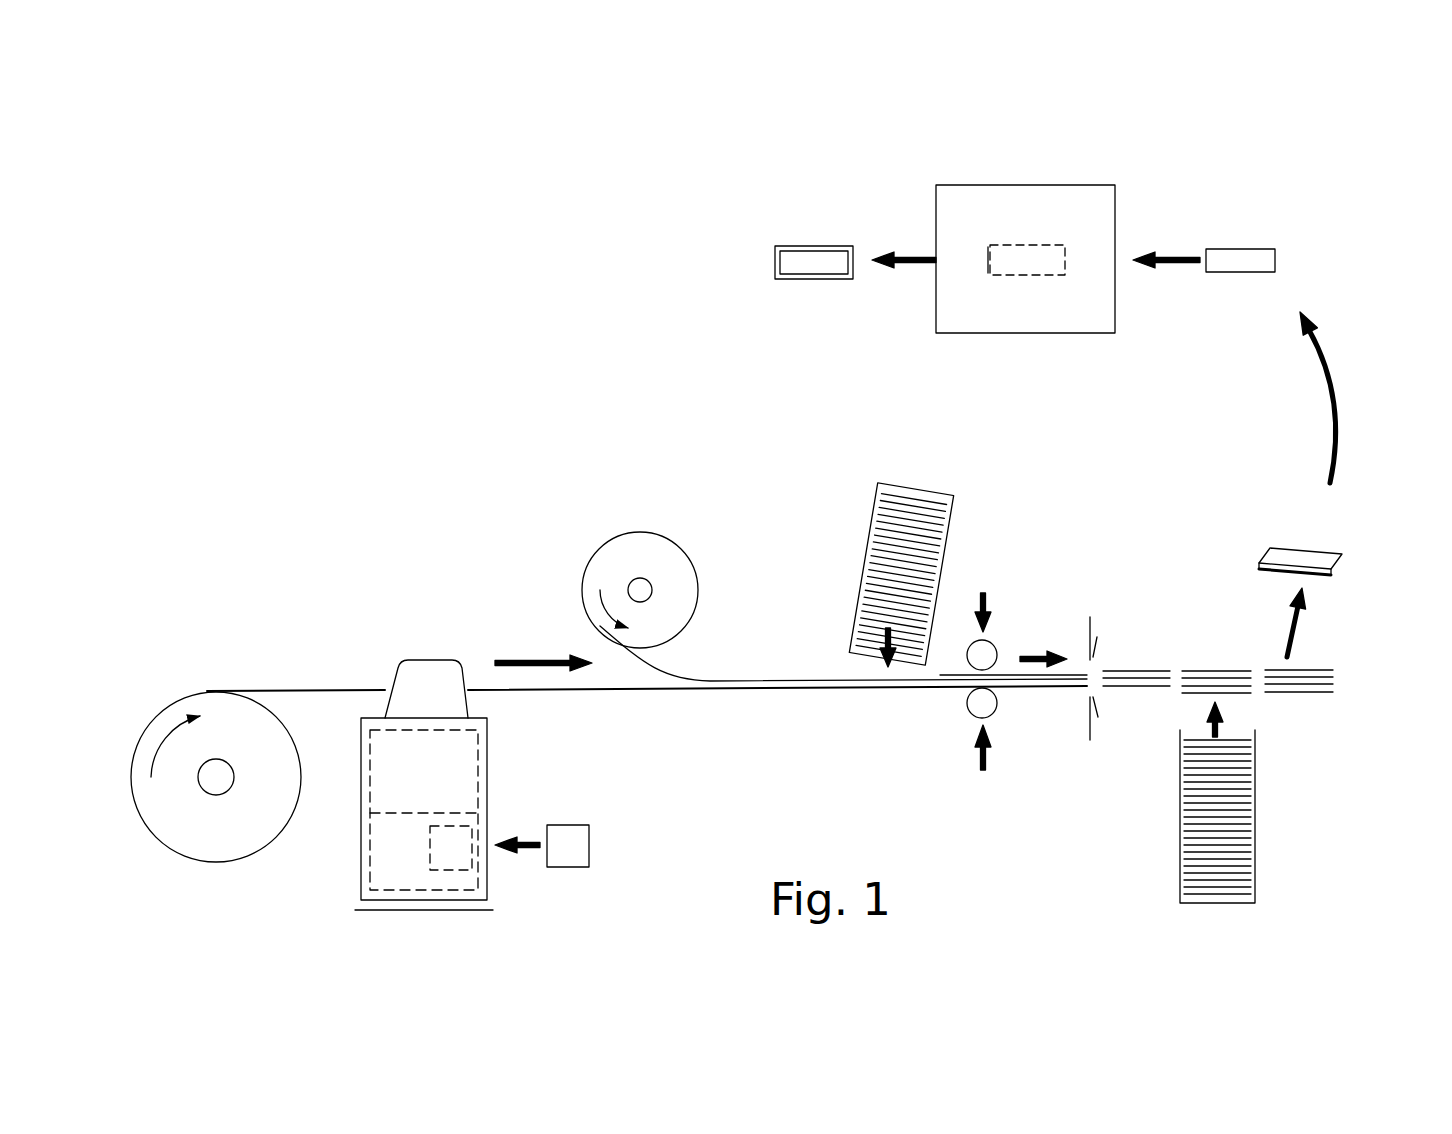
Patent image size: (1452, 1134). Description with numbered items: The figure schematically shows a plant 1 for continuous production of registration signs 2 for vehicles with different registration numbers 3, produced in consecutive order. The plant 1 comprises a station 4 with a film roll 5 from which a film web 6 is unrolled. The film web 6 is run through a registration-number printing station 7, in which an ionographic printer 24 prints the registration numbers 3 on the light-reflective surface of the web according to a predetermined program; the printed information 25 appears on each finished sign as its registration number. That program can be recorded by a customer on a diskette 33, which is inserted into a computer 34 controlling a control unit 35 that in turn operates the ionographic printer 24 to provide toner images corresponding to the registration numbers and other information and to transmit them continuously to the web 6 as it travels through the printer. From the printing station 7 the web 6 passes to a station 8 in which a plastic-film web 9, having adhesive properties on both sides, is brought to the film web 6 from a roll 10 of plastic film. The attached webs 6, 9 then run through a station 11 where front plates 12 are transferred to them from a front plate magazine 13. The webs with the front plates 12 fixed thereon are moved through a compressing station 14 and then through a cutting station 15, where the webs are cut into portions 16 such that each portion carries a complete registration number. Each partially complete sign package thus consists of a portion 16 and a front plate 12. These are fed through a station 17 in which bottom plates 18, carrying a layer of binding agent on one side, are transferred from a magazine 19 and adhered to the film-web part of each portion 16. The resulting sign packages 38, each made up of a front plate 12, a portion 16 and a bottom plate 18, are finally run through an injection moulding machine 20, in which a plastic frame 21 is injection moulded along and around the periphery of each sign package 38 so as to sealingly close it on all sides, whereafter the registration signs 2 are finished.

The plant 1 is at (321, 542).
The registration sign 2 is at (1020, 348).
The registration number 3 is at (1020, 397).
The station 4 is at (214, 754).
The film roll 5 is at (202, 838).
The film web 6 is at (300, 688).
The registration-number printing station 7 is at (391, 747).
The station 8 is at (842, 666).
The plastic-film web 9 is at (658, 661).
The roll of plastic film 10 is at (612, 552).
The station 11 is at (883, 702).
The front plate 12 is at (855, 664).
The front plate magazine 13 is at (926, 593).
The compressing station 14 is at (1000, 634).
The cutting station 15 is at (1105, 534).
The portion 16 is at (1130, 678).
The station 17 is at (1181, 713).
The bottom plate 18 is at (1225, 893).
The magazine 19 is at (1194, 820).
The injection moulding machine 20 is at (1036, 215).
The frame 21 is at (1000, 245).
The ionographic printer 24 is at (438, 672).
The printed information 25 is at (832, 275).
The diskette 33 is at (556, 868).
The computer 34 is at (368, 862).
The control unit 35 is at (370, 768).
The sign package 38 is at (1306, 662).